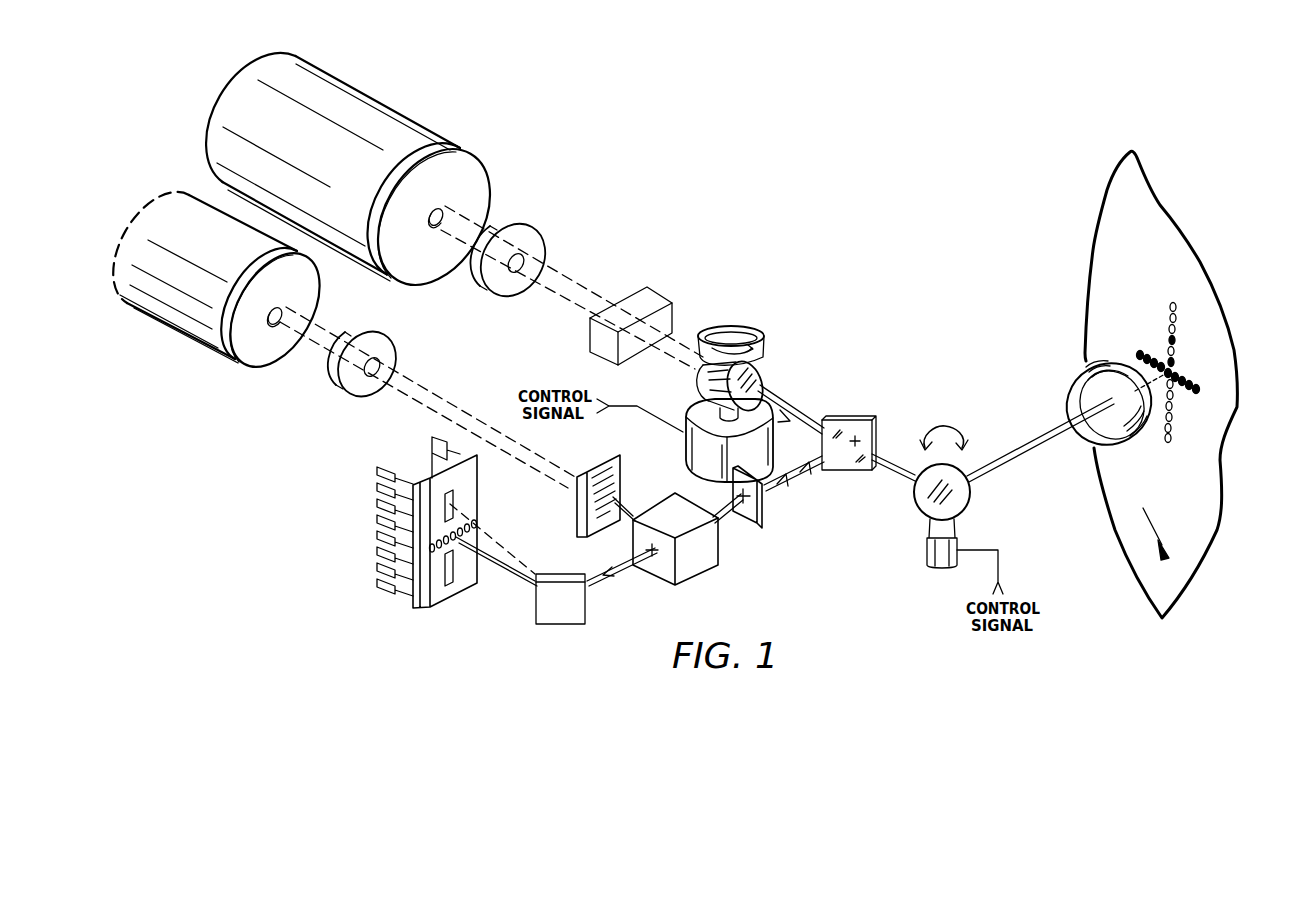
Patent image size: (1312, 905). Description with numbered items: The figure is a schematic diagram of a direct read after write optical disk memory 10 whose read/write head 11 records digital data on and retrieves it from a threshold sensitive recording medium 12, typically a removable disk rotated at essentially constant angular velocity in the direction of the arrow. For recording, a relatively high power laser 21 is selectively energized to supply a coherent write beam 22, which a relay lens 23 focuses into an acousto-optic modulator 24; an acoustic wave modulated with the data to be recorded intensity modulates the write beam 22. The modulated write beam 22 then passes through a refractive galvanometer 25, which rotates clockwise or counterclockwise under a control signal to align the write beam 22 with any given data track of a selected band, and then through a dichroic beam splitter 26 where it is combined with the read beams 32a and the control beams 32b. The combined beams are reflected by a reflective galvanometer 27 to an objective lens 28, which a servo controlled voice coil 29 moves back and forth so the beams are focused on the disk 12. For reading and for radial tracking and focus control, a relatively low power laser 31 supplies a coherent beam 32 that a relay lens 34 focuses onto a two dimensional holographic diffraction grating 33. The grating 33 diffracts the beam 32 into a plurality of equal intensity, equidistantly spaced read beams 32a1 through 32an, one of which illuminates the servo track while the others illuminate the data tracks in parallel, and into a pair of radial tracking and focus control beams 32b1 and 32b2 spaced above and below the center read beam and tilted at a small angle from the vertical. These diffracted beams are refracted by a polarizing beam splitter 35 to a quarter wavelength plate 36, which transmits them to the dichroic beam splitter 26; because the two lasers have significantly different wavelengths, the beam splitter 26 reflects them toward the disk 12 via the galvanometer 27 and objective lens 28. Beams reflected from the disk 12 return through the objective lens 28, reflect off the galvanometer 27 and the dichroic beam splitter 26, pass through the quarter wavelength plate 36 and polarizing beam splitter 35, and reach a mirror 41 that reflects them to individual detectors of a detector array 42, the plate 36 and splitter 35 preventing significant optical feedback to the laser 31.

The direct read after write optical recorder or disk memory 10 is at (624, 232).
The read/write head 11 is at (1008, 568).
The recording medium 12 is at (1097, 253).
The high power laser 21 is at (392, 130).
The write light beam 22 is at (488, 216).
The relay lens 23 is at (500, 294).
The acousto-optic modulator 24 is at (648, 292).
The refractive galvanometer 25 is at (770, 372).
The dichroic beam splitter 26 is at (862, 418).
The reflective galvanometer 27 is at (960, 500).
The objective lens 28 is at (1090, 437).
The servo controlled voice coil 29 is at (1067, 387).
The low power laser 31 is at (197, 337).
The coherent light beam 32 is at (322, 345).
The read beams 32a is at (525, 539).
The radial tracking and focus control beams 32b is at (896, 477).
The first read beam 32a1 is at (1147, 352).
The last read beam 32an is at (1197, 389).
The first radial tracking and focus control beam 32b1 is at (1171, 333).
The second radial tracking and focus control beam 32b2 is at (1173, 410).
The two dimensional holographic diffraction grating 33 is at (625, 458).
The relay lens 34 is at (394, 346).
The polarizing beam splitter 35 is at (687, 574).
The quarter wavelength plate 36 is at (763, 533).
The mirror 41 is at (583, 610).
The detector array 42 is at (448, 593).